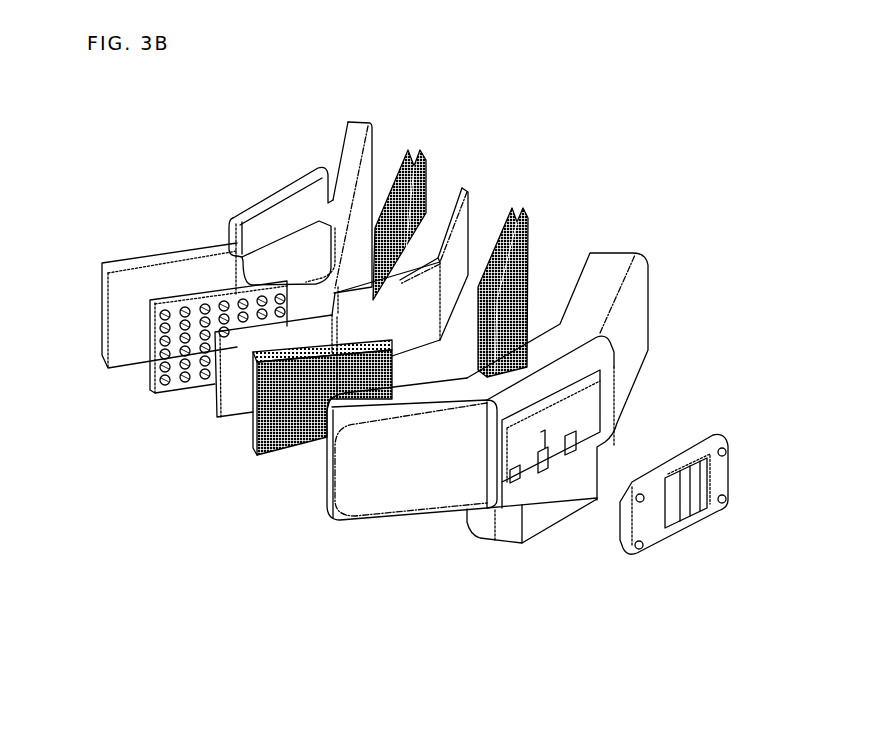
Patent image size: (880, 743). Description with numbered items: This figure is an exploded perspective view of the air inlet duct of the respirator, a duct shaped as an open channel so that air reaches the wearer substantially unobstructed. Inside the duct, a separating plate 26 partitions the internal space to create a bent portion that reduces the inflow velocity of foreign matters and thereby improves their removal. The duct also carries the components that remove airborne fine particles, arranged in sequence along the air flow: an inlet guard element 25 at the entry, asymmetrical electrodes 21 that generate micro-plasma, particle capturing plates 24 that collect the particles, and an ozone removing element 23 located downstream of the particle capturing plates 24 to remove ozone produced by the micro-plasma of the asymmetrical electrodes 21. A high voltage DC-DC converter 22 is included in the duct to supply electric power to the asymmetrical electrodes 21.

The asymmetrical electrodes 21 is at (553, 453).
The high voltage DC-DC converter 22 is at (530, 523).
The ozone removing element 23 is at (400, 152).
The particle capturing plates 24 is at (512, 210).
The inlet guard element 25 is at (682, 460).
The separating plate 26 is at (455, 192).